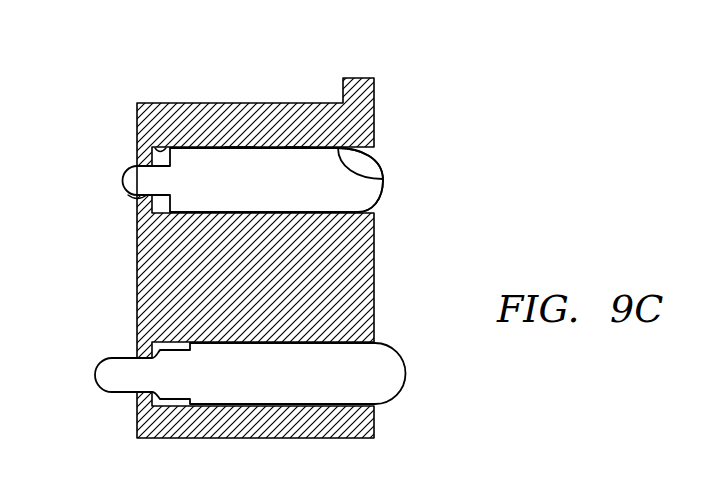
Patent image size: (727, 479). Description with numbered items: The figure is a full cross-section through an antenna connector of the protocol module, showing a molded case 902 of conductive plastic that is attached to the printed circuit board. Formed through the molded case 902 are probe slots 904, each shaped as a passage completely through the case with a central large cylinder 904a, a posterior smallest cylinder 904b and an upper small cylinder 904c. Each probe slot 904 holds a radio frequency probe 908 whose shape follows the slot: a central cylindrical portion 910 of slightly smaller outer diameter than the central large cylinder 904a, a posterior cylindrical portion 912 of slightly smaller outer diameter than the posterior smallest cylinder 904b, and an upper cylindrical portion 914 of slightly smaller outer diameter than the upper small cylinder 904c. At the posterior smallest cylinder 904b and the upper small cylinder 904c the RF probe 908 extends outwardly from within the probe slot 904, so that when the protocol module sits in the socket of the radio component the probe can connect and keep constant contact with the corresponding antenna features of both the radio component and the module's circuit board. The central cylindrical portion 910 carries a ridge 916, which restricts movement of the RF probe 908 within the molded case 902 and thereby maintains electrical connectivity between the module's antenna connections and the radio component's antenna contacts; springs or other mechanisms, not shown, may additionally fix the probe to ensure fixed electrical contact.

The molded case 902 is at (375, 292).
The probe slot 904 is at (137, 146).
The central large cylinder 904a is at (173, 158).
The posterior smallest cylinder 904b is at (132, 198).
The upper small cylinder 904c is at (384, 177).
The RF probe 908 is at (382, 168).
The central cylindrical portion 910 is at (240, 150).
The posterior cylindrical portion 912 is at (130, 167).
The upper cylindrical portion 914 is at (384, 181).
The ridge 916 is at (297, 150).